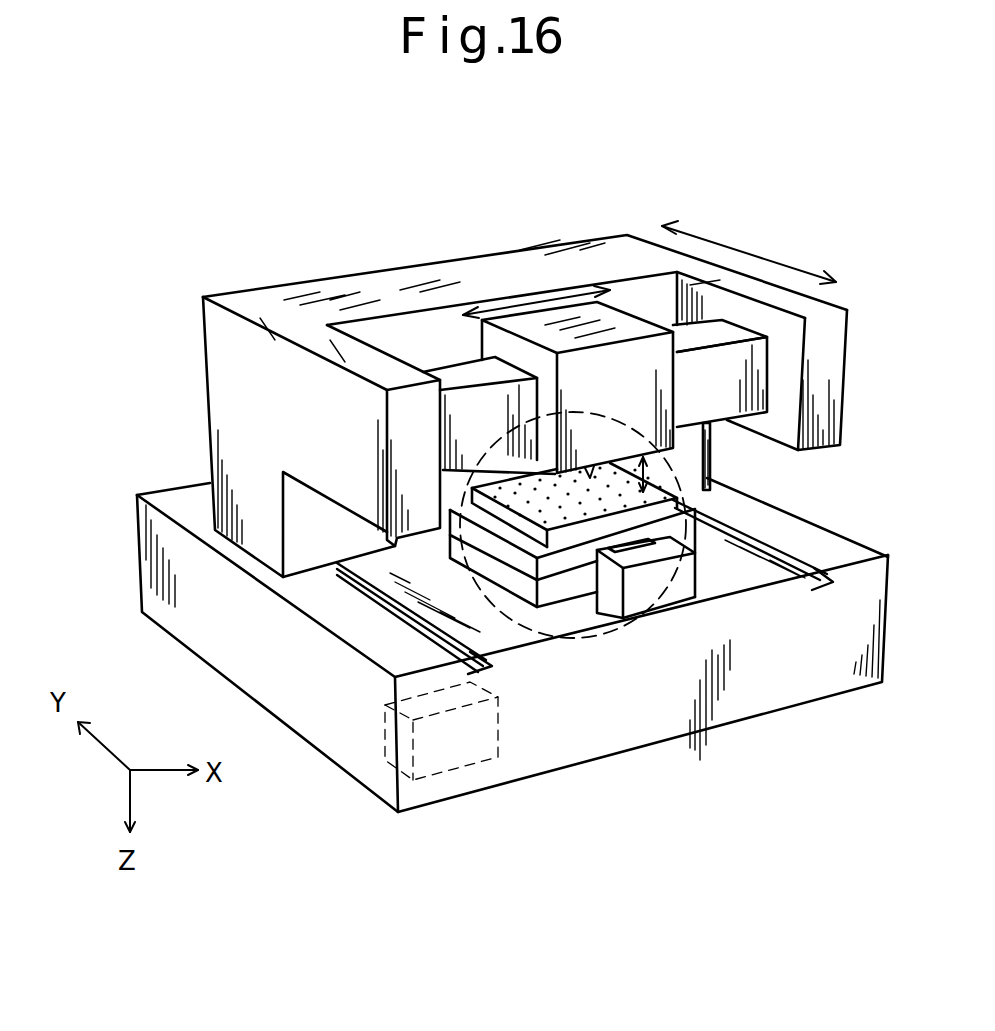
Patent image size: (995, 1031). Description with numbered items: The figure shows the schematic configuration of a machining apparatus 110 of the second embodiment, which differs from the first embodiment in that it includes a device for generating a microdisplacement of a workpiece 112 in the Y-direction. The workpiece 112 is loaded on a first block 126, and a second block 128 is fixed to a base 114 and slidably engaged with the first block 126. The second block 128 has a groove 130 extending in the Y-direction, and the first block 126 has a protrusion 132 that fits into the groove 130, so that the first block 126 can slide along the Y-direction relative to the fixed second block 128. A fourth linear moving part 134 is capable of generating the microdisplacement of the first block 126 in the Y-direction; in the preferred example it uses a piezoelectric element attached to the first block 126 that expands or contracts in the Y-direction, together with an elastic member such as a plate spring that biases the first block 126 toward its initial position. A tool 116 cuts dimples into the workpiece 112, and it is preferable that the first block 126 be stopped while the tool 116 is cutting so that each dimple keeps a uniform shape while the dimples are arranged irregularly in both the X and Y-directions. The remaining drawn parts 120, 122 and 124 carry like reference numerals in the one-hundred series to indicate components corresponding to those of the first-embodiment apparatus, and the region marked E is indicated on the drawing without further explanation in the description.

The machining apparatus 110 is at (176, 266).
The workpiece 112 is at (675, 503).
The base 114 is at (835, 668).
The tool 116 is at (613, 474).
The Z-axis slider head 120 is at (638, 367).
The gantry frame 122 is at (252, 347).
The drive unit 124 is at (433, 757).
The first block 126 is at (685, 525).
The second block 128 is at (582, 590).
The groove 130 is at (560, 587).
The protrusion 132 is at (550, 582).
The fourth linear moving part 134 is at (672, 522).
The enlarged region E is at (490, 432).